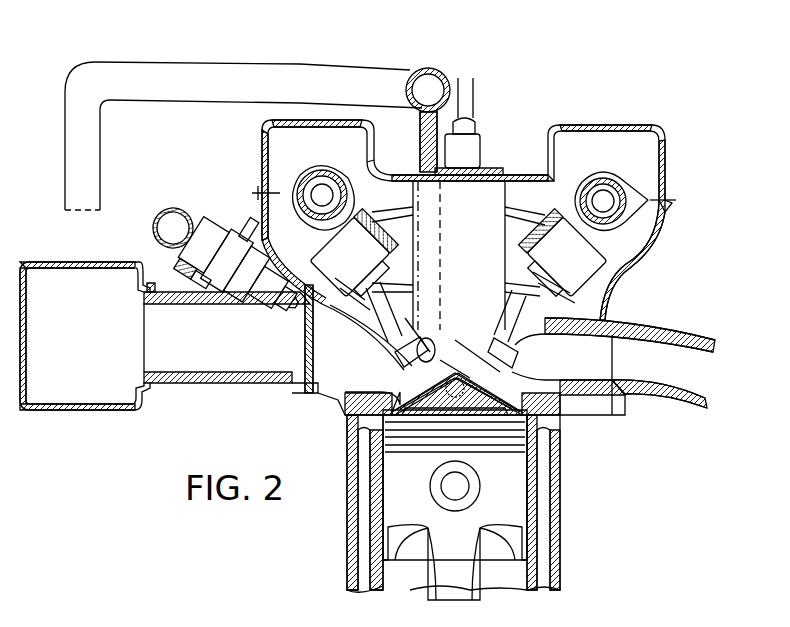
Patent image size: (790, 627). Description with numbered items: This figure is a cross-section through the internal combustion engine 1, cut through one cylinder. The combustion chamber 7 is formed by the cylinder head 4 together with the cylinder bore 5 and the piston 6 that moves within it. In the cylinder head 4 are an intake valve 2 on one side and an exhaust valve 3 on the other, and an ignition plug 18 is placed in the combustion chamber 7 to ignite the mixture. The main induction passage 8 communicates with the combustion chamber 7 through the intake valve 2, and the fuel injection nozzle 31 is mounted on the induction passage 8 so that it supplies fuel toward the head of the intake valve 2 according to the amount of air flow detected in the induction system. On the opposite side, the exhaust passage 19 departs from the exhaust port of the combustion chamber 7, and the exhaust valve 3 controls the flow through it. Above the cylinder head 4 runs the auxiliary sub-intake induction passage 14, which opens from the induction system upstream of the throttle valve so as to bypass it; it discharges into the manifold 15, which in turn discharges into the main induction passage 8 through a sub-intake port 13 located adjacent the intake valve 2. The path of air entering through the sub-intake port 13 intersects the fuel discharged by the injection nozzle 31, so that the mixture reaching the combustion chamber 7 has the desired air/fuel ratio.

The internal combustion engine 1 is at (690, 198).
The intake valve 2 is at (400, 367).
The exhaust valve 3 is at (512, 352).
The cylinder head 4 is at (600, 414).
The cylinder bore 5 is at (562, 481).
The piston 6 is at (505, 503).
The combustion chamber 7 is at (466, 396).
The induction passage 8 is at (214, 372).
The sub-intake port 13 is at (438, 348).
The sub-intake induction passage 14 is at (217, 72).
The manifold 15 is at (442, 72).
The ignition plug 18 is at (447, 392).
The exhaust passage 19 is at (648, 382).
The fuel injection nozzle 31 is at (266, 300).